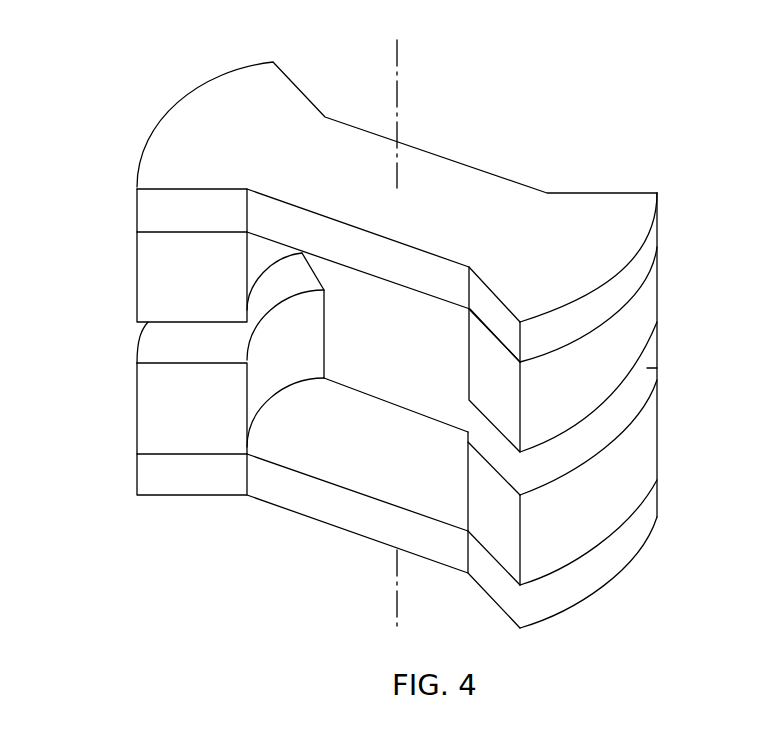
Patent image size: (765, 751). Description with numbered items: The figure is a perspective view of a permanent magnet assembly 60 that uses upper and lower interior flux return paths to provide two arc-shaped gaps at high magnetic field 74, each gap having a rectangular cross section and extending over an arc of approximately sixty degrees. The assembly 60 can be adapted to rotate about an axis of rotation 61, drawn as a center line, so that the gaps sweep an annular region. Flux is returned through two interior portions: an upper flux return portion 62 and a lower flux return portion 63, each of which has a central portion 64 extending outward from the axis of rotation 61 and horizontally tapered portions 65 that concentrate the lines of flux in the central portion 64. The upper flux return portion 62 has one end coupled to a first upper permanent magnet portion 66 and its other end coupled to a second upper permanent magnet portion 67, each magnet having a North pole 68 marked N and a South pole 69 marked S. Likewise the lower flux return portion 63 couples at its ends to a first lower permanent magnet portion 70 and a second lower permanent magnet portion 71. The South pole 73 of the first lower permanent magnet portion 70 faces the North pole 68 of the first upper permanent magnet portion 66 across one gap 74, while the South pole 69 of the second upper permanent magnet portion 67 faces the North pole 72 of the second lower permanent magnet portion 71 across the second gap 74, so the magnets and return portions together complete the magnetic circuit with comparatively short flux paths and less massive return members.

The permanent magnet assembly 60 is at (606, 104).
The axis of rotation 61 is at (398, 82).
The upper flux return portion 62 is at (452, 183).
The lower flux return portion 63 is at (297, 514).
The central portion 64 is at (420, 173).
The horizontally tapered portion 65 is at (237, 118).
The first upper permanent magnet portion 66 is at (613, 347).
The second upper permanent magnet portion 67 is at (165, 277).
The North pole 68 is at (183, 242).
The South pole 69 is at (183, 308).
The first lower permanent magnet portion 70 is at (612, 488).
The second lower permanent magnet portion 71 is at (145, 412).
The North pole of second lower permanent magnet portion 72 is at (183, 371).
The South pole of first lower permanent magnet portion 73 is at (183, 443).
The arc-shaped gap at high magnetic field 74 is at (163, 342).